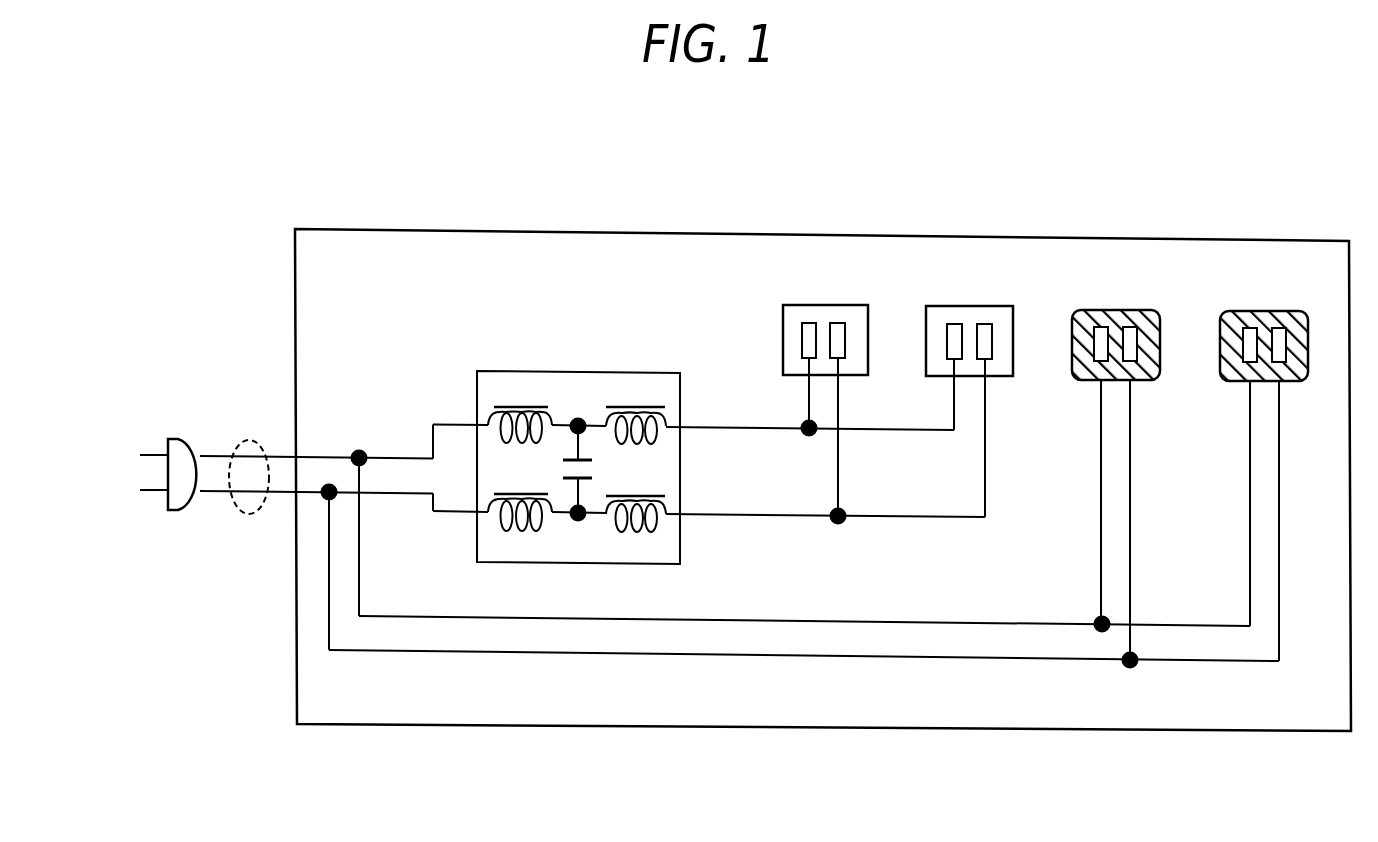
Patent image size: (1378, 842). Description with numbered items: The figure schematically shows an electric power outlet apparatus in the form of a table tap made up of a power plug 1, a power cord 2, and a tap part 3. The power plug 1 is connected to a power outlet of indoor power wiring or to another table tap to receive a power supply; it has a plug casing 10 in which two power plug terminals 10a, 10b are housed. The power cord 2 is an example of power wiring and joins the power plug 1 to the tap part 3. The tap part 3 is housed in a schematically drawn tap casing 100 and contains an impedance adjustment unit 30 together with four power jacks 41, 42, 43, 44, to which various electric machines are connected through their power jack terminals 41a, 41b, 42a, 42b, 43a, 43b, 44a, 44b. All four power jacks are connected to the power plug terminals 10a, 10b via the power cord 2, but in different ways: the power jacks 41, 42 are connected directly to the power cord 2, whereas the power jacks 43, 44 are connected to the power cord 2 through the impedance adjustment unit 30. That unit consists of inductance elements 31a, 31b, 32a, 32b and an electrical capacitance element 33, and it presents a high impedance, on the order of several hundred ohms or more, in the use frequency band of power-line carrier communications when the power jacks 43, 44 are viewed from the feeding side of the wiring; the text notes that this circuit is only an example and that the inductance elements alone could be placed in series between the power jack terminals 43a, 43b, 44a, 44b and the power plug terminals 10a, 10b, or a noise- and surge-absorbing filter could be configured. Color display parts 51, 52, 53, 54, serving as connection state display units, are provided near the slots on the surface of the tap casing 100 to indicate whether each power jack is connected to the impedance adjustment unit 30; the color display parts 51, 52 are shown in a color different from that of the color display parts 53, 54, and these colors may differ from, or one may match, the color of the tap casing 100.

The power plug 1 is at (176, 407).
The power cord 2 is at (252, 515).
The tap part 3 is at (826, 189).
The plug casing 10 is at (178, 512).
The power plug terminal 10a is at (145, 456).
The power plug terminal 10b is at (145, 491).
The impedance adjustment unit 30 is at (567, 370).
The inductance element 31a is at (500, 408).
The inductance element 31b is at (507, 522).
The inductance element 32a is at (653, 402).
The inductance element 32b is at (657, 530).
The electrical capacitance element 33 is at (597, 467).
The power jack 41 is at (1262, 305).
The power jack terminal 41a is at (1253, 348).
The power jack terminal 41b is at (1283, 347).
The power jack 42 is at (1105, 305).
The power jack terminal 42a is at (1105, 348).
The power jack terminal 42b is at (1135, 347).
The power jack 43 is at (955, 305).
The power jack terminal 43a is at (954, 343).
The power jack terminal 43b is at (990, 345).
The power jack 44 is at (805, 305).
The power jack terminal 44a is at (808, 343).
The power jack terminal 44b is at (845, 340).
The color display part 51 is at (1263, 380).
The color display part 52 is at (1117, 380).
The color display part 53 is at (965, 368).
The color display part 54 is at (822, 370).
The tap casing 100 is at (527, 229).